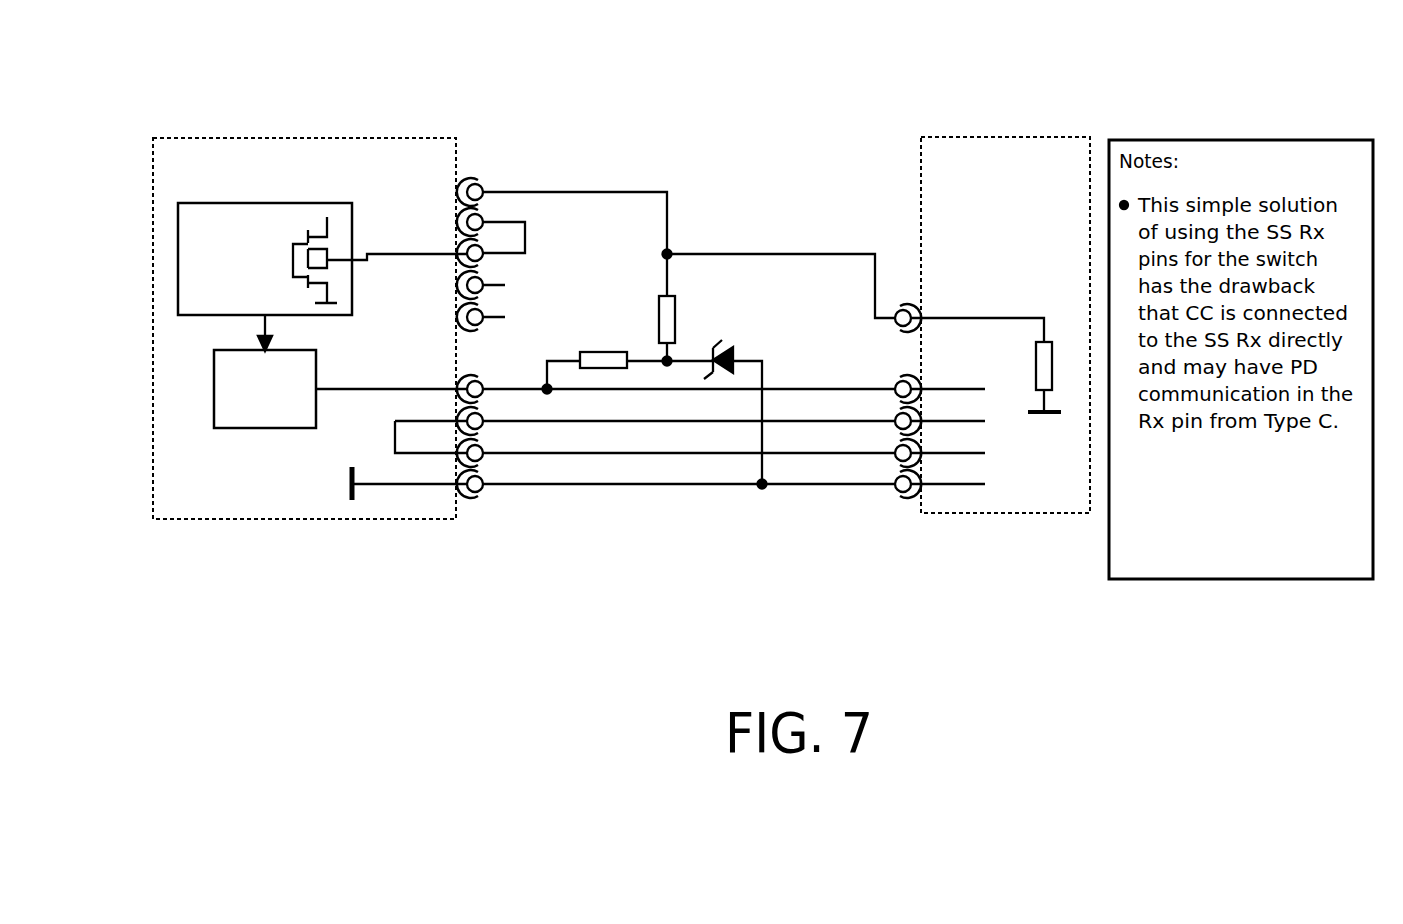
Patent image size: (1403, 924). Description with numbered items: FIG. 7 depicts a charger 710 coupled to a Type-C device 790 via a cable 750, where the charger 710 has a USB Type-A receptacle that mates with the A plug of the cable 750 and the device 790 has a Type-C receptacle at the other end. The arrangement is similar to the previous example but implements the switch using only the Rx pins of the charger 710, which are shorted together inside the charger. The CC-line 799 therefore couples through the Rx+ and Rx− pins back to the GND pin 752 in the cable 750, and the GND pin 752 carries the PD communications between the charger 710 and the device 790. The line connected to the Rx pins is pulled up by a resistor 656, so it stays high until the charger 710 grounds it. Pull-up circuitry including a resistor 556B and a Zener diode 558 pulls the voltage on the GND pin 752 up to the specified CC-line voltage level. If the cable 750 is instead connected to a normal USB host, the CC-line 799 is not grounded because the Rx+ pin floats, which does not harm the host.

The charger 710 is at (325, 177).
The cable 750 is at (920, 138).
The GND pin 752 is at (512, 257).
The resistor 656 is at (657, 313).
The resistor 556B is at (600, 356).
The Zener diode 558 is at (735, 354).
The CC-line 799 is at (877, 265).
The device 790 is at (1022, 264).